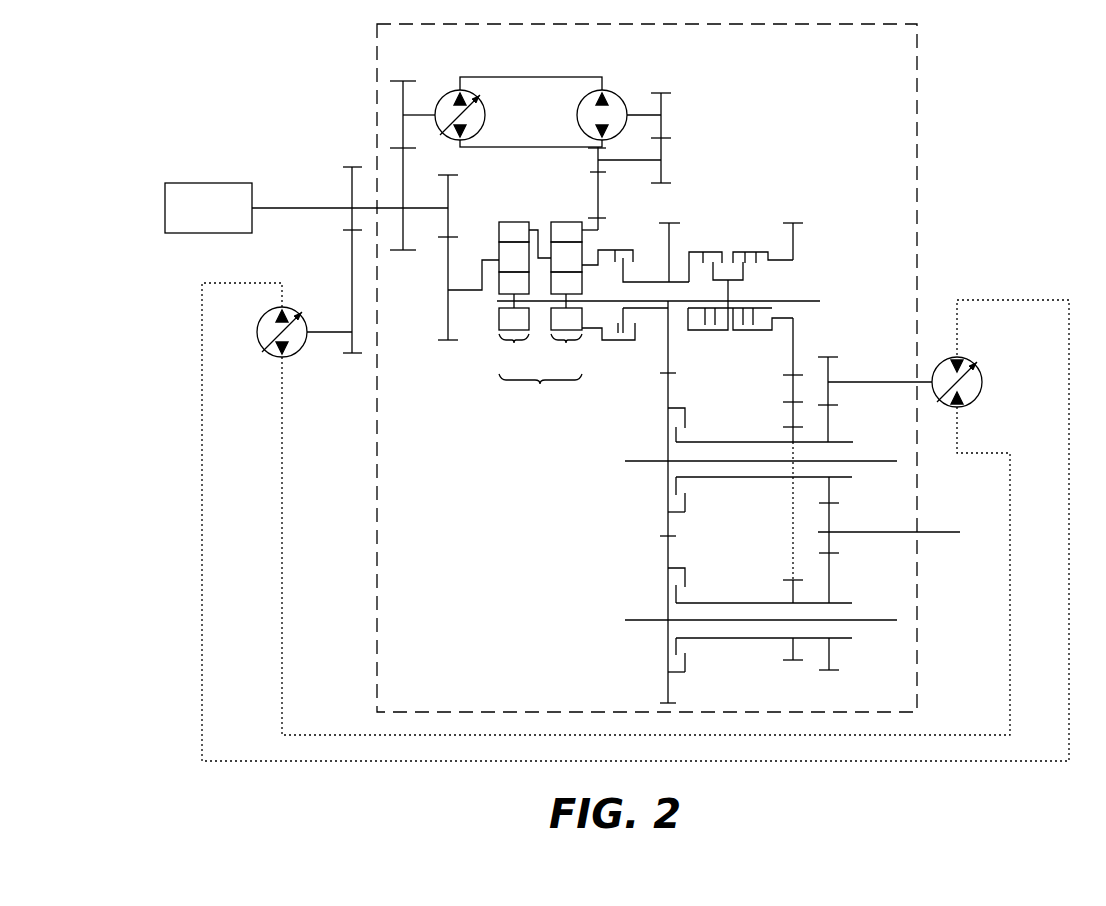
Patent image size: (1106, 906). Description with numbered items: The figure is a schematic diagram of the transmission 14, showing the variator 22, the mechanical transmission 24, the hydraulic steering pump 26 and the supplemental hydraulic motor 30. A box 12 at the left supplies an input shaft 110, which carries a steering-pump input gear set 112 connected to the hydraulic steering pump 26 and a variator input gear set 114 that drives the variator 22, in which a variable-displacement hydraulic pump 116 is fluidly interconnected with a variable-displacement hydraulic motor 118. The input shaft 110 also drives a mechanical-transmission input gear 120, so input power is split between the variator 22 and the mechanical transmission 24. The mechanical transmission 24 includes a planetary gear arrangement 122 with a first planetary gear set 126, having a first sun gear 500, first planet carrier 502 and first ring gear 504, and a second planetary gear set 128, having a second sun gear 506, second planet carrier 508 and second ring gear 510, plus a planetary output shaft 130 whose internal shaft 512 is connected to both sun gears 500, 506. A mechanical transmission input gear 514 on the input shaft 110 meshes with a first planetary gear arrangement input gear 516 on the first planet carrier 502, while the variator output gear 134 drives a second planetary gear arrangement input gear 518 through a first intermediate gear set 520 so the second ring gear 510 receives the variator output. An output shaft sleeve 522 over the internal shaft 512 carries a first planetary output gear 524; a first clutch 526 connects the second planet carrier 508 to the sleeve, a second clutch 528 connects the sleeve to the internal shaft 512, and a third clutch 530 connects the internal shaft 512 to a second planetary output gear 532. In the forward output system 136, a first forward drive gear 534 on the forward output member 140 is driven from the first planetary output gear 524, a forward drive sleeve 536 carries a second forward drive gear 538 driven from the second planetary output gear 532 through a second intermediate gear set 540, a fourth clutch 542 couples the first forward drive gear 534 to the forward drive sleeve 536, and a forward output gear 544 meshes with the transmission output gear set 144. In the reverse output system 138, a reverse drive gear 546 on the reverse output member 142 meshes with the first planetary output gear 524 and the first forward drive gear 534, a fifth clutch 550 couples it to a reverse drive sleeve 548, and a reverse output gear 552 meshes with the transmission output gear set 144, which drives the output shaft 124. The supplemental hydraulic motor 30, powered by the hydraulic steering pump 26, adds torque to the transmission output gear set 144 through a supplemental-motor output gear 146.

The engine 12 is at (208, 208).
The transmission 14 is at (917, 98).
The variator 22 is at (553, 55).
The mechanical transmission 24 is at (527, 447).
The hydraulic steering pump 26 is at (300, 350).
The supplemental hydraulic motor 30 is at (983, 385).
The input shaft 110 is at (275, 207).
The steering-pump input gear set 112 is at (345, 282).
The variator input gear set 114 is at (397, 122).
The variable-displacement hydraulic pump 116 is at (487, 122).
The variable-displacement hydraulic motor 118 is at (620, 95).
The mechanical-transmission input gear 120 is at (464, 218).
The planetary gear arrangement 122 is at (540, 390).
The output shaft 124 is at (953, 533).
The first planetary gear set 126 is at (514, 321).
The second planetary gear set 128 is at (567, 321).
The planetary output shaft 130 is at (737, 178).
The variator output gear 134 is at (665, 105).
The forward output system 136 is at (658, 608).
The reverse output system 138 is at (660, 455).
The forward output member 140 is at (860, 622).
The reverse output member 142 is at (858, 462).
The transmission output gear set 144 is at (832, 515).
The supplemental-motor output gear 146 is at (829, 365).
The first sun gear 500 is at (499, 286).
The first planet carrier 502 is at (502, 253).
The first ring gear 504 is at (507, 236).
The second sun gear 506 is at (577, 292).
The second planet carrier 508 is at (589, 260).
The second ring gear 510 is at (567, 220).
The internal shaft 512 is at (808, 298).
The mechanical transmission input gear 514 is at (450, 192).
The first planetary gear arrangement input gear 516 is at (448, 306).
The second planetary gear arrangement input gear 518 is at (598, 232).
The first intermediate gear set 520 is at (672, 158).
The output shaft sleeve 522 is at (675, 313).
The first planetary output gear 524 is at (671, 234).
The first clutch 526 is at (623, 345).
The second clutch 528 is at (704, 248).
The third clutch 530 is at (758, 333).
The second planetary output gear 532 is at (796, 236).
The first forward drive gear 534 is at (668, 677).
The forward drive sleeve 536 is at (728, 603).
The second forward drive gear 538 is at (791, 652).
The second intermediate gear set 540 is at (804, 384).
The fourth clutch 542 is at (686, 575).
The forward output gear 544 is at (832, 657).
The reverse drive gear 546 is at (666, 475).
The reverse drive sleeve 548 is at (731, 478).
The fifth clutch 550 is at (686, 415).
The reverse output gear 552 is at (830, 432).